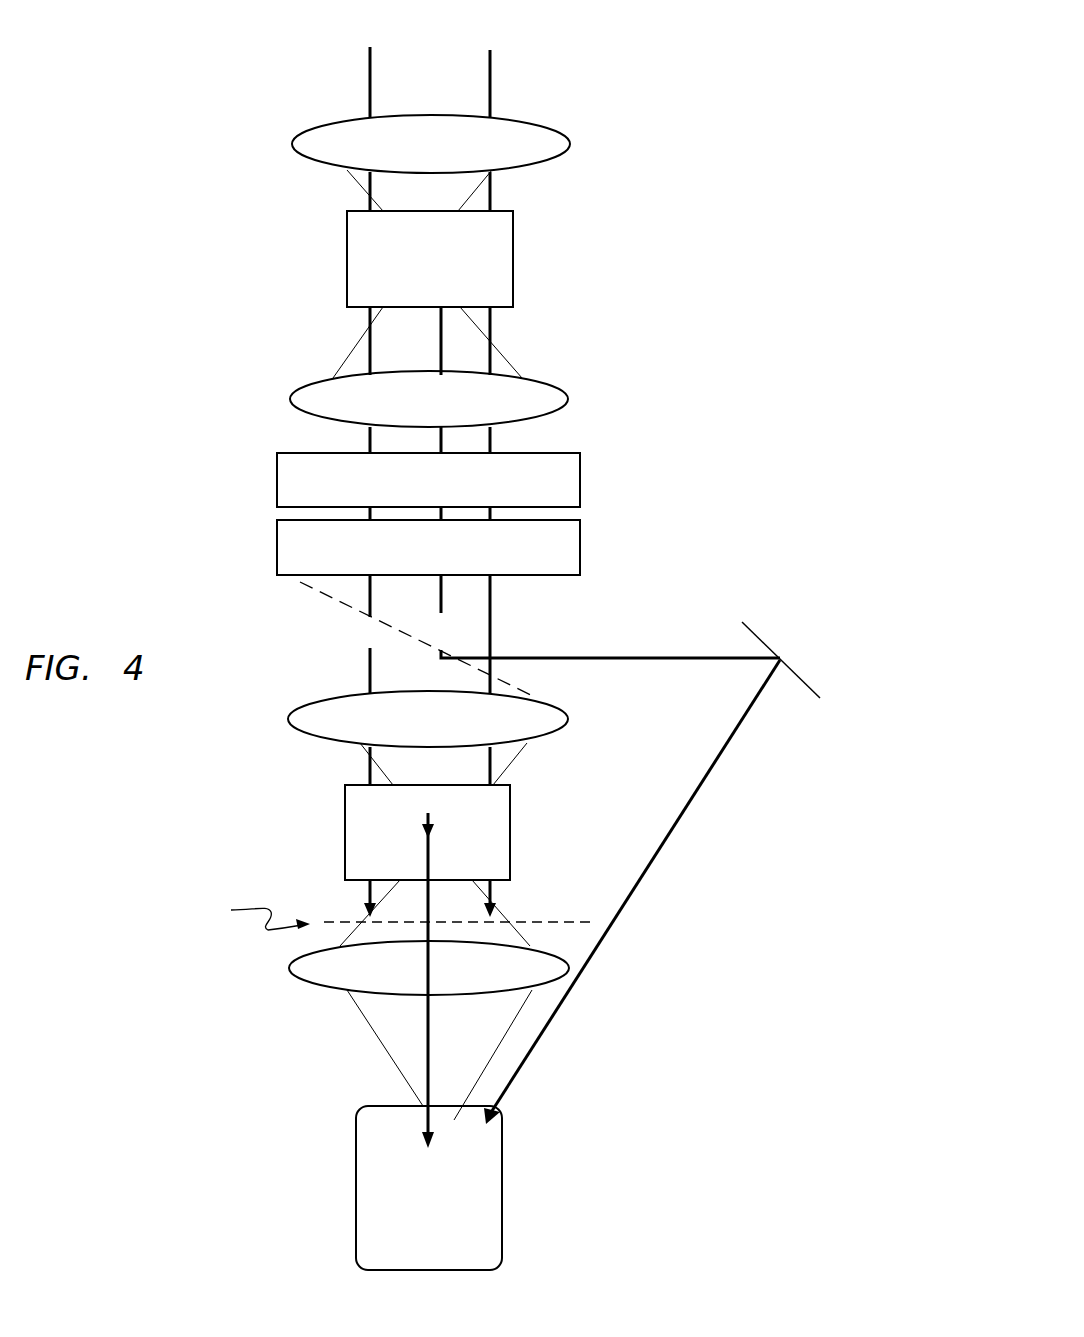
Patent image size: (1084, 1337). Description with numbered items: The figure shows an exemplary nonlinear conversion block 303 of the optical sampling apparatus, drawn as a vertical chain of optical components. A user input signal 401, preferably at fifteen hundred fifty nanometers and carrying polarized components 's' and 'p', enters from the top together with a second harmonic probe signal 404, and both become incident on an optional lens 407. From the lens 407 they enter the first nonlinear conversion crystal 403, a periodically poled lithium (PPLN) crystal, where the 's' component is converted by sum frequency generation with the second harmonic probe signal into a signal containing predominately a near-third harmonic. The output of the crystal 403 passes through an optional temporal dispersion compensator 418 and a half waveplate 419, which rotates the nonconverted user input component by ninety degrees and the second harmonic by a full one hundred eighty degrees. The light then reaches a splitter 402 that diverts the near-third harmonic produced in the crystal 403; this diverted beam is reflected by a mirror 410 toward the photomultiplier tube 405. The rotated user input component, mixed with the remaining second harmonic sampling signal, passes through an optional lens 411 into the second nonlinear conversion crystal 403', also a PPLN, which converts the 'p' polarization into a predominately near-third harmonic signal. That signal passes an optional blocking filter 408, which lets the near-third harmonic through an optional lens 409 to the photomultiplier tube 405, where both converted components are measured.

The user input signal 401 is at (330, 33).
The second harmonic probe signal 404 is at (593, 28).
The lens 407 is at (293, 148).
The first nonlinear conversion crystal 403 is at (457, 243).
The nonlinear conversion block 303 is at (675, 412).
The temporal dispersion compensator 418 is at (277, 478).
The half waveplate 419 is at (277, 545).
The splitter 402 is at (345, 637).
The mirror 410 is at (758, 633).
The lens 411 is at (330, 740).
The second nonlinear conversion crystal 403' is at (455, 817).
The blocking filter 408 is at (534, 921).
The lens 409 is at (329, 990).
The photomultiplier tube 405 is at (356, 1194).